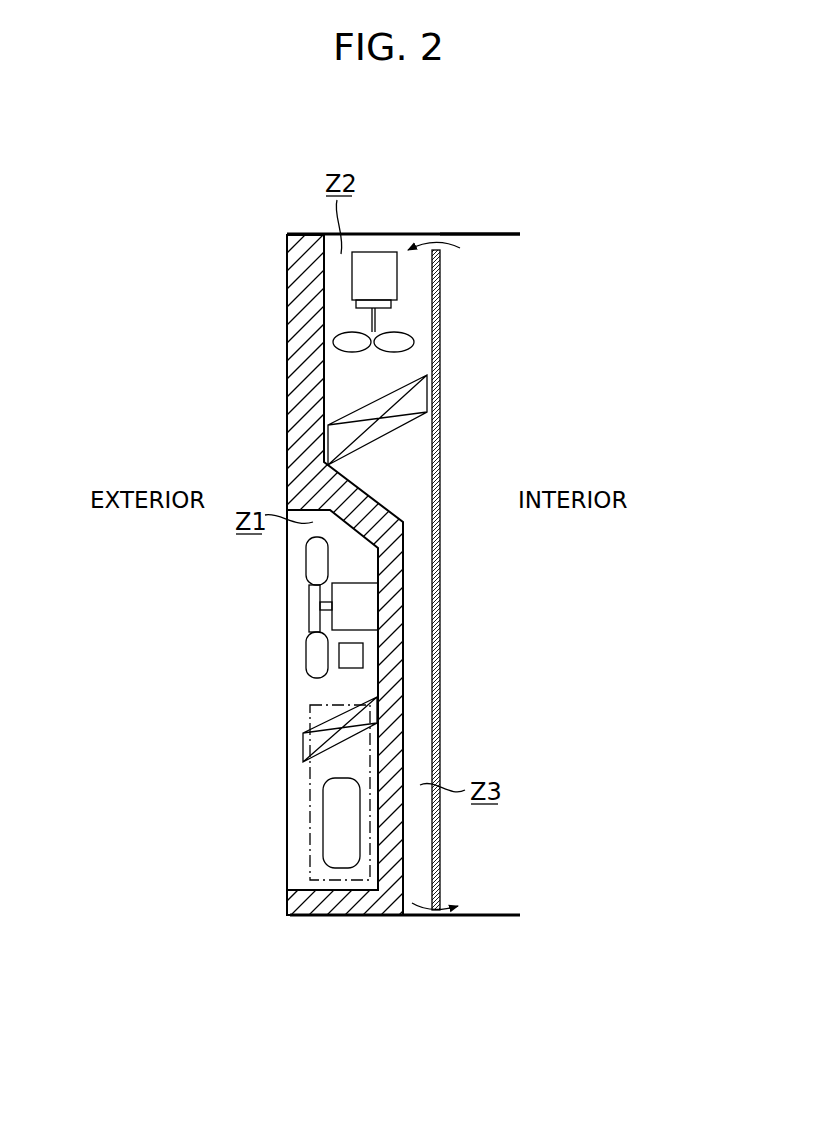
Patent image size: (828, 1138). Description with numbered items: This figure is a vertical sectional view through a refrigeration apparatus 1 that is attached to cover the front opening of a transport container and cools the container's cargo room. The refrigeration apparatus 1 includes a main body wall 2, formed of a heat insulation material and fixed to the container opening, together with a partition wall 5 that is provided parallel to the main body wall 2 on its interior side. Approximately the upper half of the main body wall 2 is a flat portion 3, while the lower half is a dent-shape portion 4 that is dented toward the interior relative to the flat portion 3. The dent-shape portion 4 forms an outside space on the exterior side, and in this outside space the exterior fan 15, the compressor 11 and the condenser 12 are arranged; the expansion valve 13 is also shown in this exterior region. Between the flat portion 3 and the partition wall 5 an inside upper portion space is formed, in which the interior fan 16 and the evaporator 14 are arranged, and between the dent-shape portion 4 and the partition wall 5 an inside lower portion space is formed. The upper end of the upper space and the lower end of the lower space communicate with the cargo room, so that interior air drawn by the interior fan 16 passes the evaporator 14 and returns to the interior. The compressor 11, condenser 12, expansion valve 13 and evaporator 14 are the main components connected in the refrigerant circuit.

The refrigeration apparatus 1 is at (237, 298).
The main body wall 2 is at (287, 268).
The flat portion 3 is at (300, 380).
The dent-shape portion 4 is at (400, 643).
The partition wall 5 is at (440, 693).
The compressor 11 is at (313, 822).
The condenser 12 is at (310, 713).
The expansion valve 13 is at (313, 650).
The evaporator 14 is at (390, 430).
The exterior fan 15 is at (313, 558).
The interior fan 16 is at (397, 270).